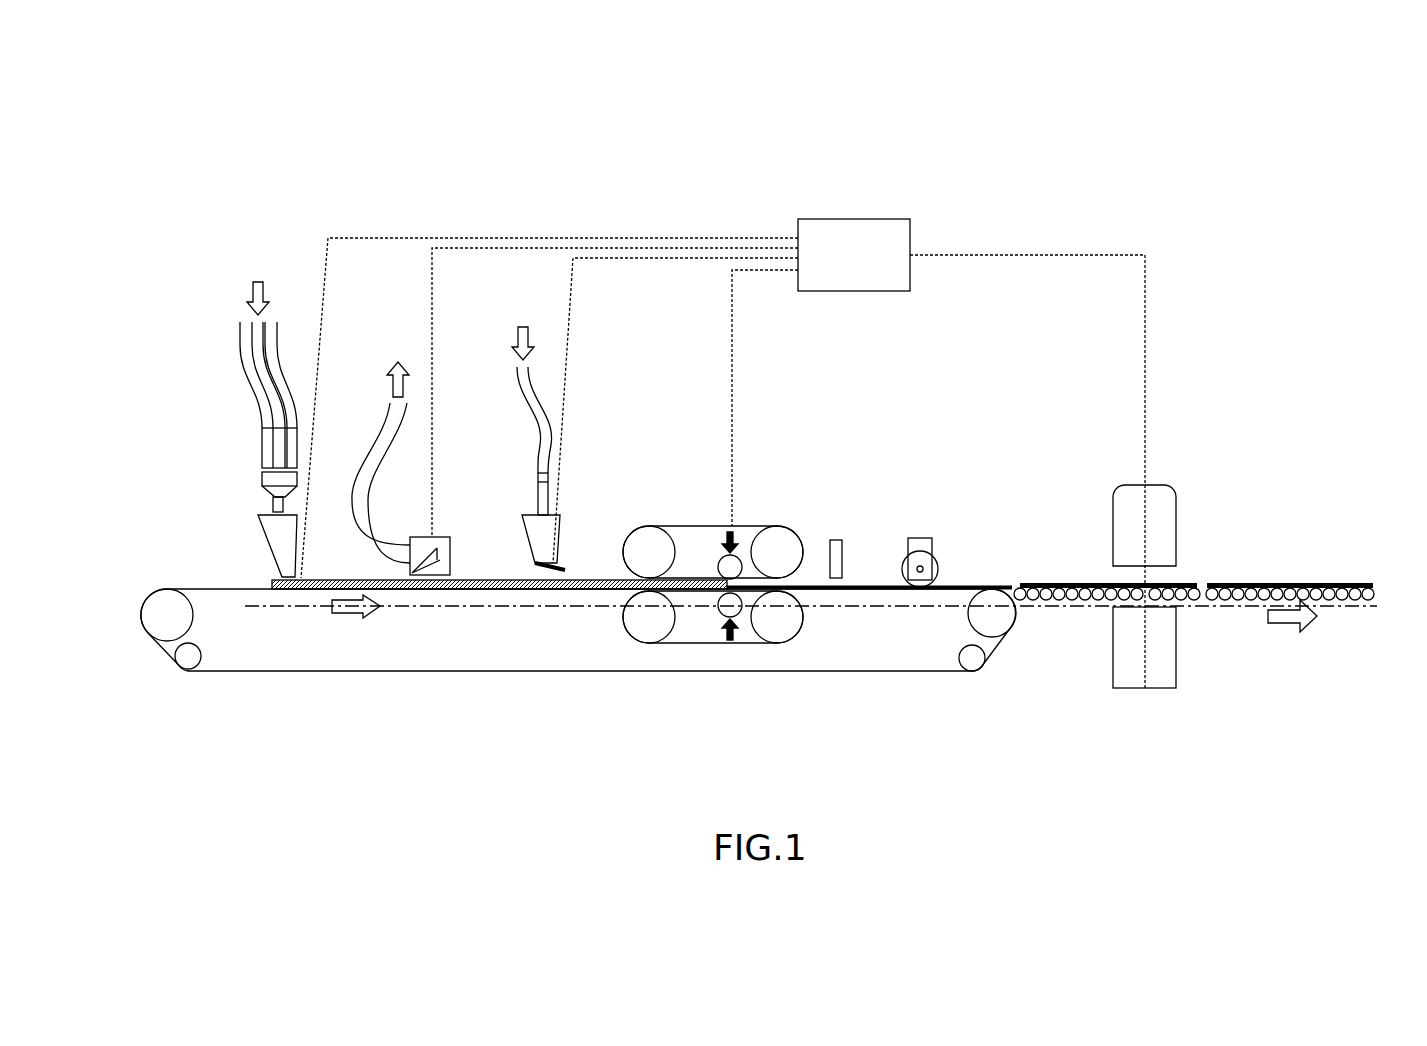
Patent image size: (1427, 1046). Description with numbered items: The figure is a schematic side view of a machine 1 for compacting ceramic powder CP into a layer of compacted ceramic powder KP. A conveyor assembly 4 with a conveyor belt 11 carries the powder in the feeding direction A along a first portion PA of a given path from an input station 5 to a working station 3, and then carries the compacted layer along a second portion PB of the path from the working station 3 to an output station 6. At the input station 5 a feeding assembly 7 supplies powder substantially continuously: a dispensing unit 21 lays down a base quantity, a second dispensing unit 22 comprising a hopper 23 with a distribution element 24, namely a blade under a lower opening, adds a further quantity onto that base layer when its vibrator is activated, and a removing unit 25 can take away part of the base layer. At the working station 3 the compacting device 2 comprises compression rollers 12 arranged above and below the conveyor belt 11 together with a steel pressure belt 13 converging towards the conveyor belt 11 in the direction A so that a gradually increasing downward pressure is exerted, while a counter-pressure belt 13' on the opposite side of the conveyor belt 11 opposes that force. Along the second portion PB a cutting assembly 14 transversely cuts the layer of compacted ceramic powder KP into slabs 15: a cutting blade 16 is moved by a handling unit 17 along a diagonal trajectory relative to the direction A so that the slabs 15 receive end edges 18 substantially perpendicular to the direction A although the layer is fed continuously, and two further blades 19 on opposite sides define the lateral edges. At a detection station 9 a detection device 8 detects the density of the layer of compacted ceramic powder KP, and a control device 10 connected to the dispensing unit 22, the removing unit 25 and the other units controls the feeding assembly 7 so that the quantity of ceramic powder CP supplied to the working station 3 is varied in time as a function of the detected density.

The machine 1 is at (996, 218).
The compacting device 2 is at (769, 478).
The working station 3 is at (694, 433).
The conveyor assembly 4 is at (759, 632).
The input station 5 is at (233, 429).
The output station 6 is at (1350, 498).
The feeding assembly 7 is at (358, 230).
The detection device 8 is at (1176, 468).
The detection station 9 is at (1104, 448).
The control device 10 is at (871, 270).
The conveyor belt 11 is at (205, 585).
The compression rollers 12 is at (727, 568).
The pressure belt 13 is at (713, 521).
The counter-pressure belt 13' is at (746, 623).
The cutting assembly 14 is at (886, 468).
The slabs 15 is at (1190, 580).
The cutting blade 16 is at (848, 580).
The handling unit 17 is at (836, 540).
The end edges 18 is at (1028, 586).
The further blades 19 is at (938, 564).
The dispensing unit 21 is at (248, 461).
The dispensing unit 22 is at (552, 448).
The hopper 23 is at (530, 518).
The distribution element 24 is at (566, 568).
The removing unit 25 is at (451, 476).
The ceramic powder CP is at (333, 580).
The first portion of the given path PA is at (490, 612).
The feeding direction A is at (347, 616).
The layer of compacted ceramic powder KP is at (880, 585).
The second portion of the given path PB is at (1050, 610).